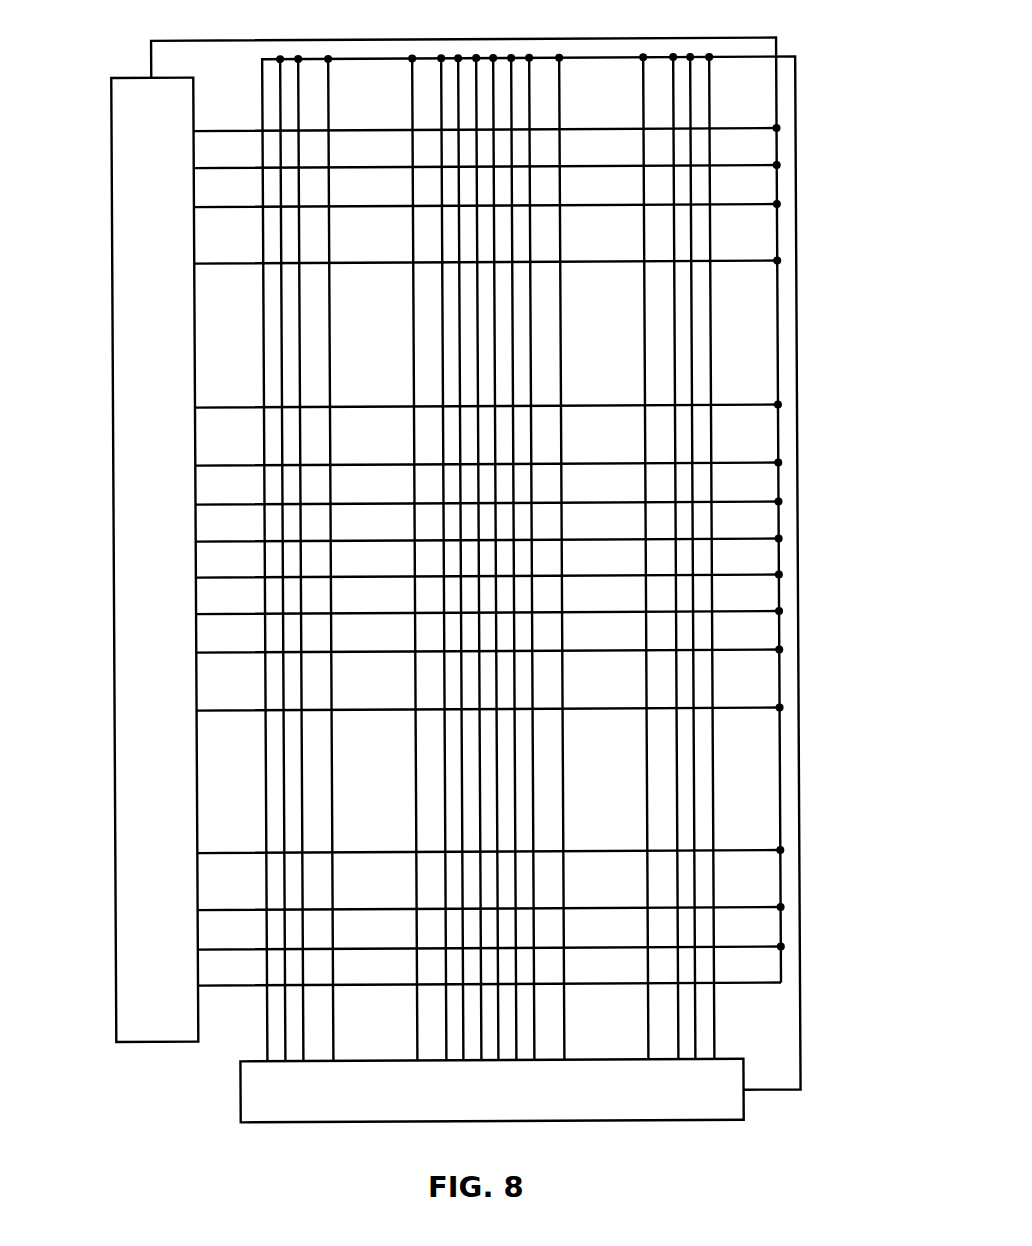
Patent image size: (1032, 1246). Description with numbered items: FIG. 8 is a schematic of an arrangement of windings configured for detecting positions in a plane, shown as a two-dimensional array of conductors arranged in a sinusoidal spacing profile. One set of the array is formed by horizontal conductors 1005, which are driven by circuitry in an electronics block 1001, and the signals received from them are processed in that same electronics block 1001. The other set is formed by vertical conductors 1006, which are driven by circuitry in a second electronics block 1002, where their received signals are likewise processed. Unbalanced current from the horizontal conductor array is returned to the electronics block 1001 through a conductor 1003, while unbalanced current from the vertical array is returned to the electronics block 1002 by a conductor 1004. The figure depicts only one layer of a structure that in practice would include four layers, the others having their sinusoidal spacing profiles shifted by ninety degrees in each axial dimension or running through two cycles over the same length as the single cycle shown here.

The electronics block 1001 is at (138, 68).
The electronics block 1002 is at (746, 1050).
The conductor 1003 is at (790, 36).
The conductor 1004 is at (808, 74).
The horizontal conductors 1005 is at (378, 276).
The vertical conductors 1006 is at (396, 395).